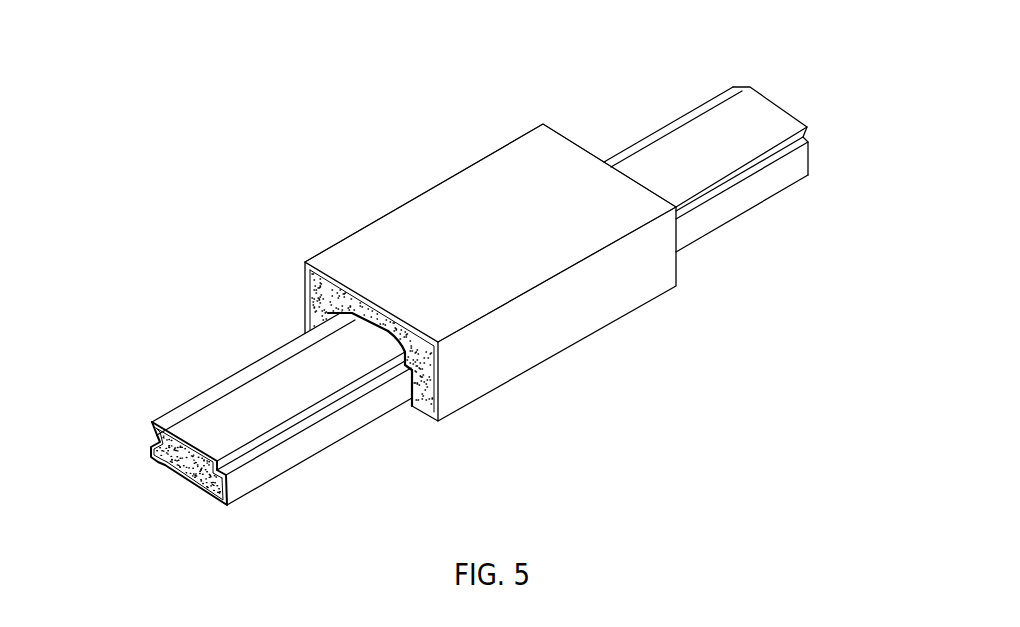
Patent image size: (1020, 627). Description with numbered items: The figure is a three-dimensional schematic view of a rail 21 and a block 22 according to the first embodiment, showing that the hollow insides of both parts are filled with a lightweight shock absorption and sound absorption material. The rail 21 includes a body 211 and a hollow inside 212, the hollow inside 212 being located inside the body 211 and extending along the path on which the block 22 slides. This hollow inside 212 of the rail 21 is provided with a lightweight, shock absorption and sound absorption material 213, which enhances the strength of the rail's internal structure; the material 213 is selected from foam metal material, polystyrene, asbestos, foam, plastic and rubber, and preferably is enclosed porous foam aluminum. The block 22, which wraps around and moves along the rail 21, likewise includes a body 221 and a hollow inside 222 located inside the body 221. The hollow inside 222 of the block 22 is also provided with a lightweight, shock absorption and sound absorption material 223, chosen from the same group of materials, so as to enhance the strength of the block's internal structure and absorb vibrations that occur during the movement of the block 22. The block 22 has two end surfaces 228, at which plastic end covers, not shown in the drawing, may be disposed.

The rail 21 is at (233, 404).
The body 211 is at (188, 418).
The hollow inside 212 is at (170, 457).
The lightweight, shock absorption and sound absorption material 213 is at (209, 500).
The block 22 is at (497, 187).
The body 221 is at (412, 228).
The hollow inside 222 is at (318, 297).
The lightweight, shock absorption and sound absorption material 223 is at (425, 402).
The end surfaces 228 is at (405, 303).